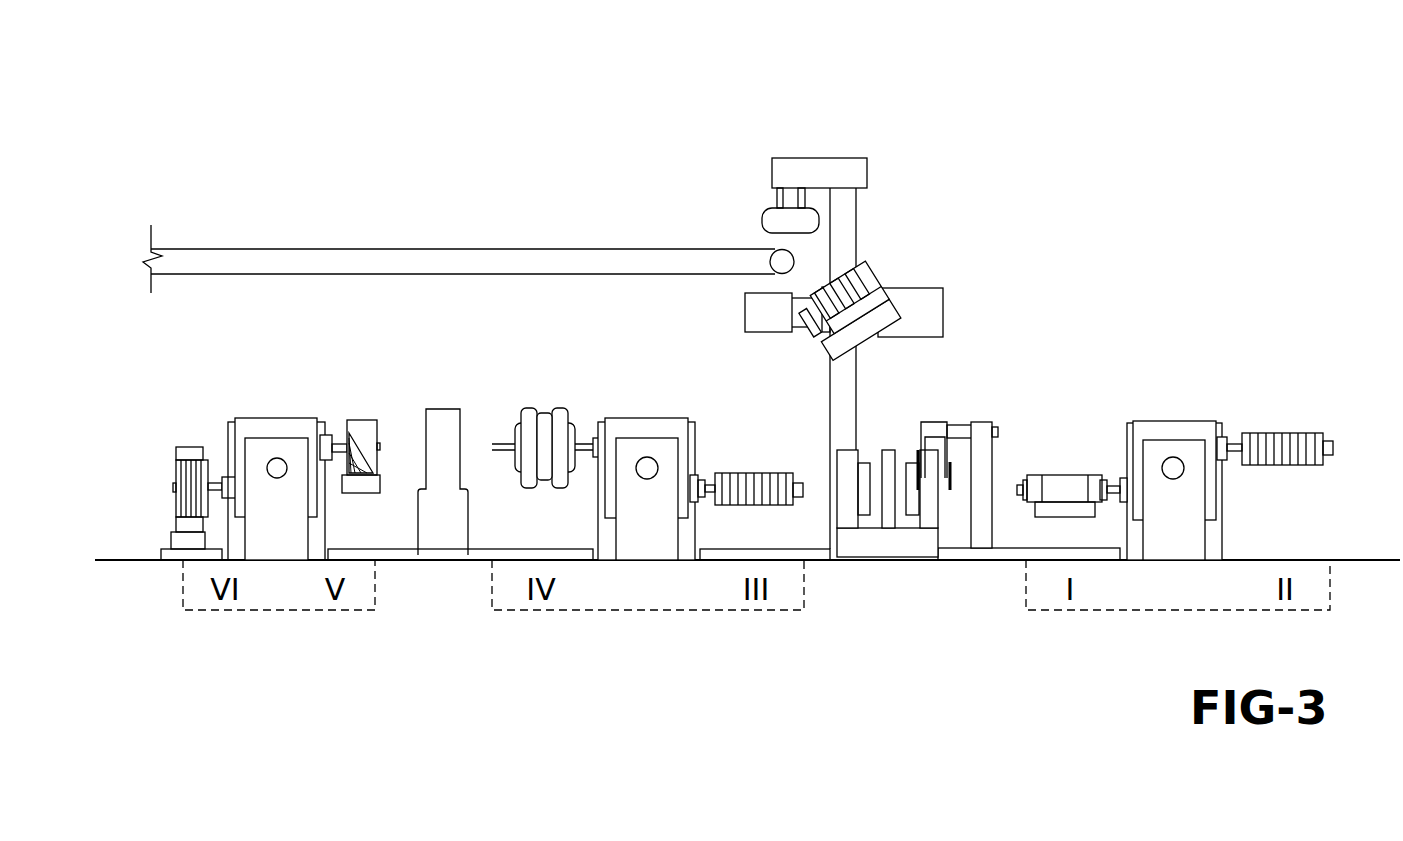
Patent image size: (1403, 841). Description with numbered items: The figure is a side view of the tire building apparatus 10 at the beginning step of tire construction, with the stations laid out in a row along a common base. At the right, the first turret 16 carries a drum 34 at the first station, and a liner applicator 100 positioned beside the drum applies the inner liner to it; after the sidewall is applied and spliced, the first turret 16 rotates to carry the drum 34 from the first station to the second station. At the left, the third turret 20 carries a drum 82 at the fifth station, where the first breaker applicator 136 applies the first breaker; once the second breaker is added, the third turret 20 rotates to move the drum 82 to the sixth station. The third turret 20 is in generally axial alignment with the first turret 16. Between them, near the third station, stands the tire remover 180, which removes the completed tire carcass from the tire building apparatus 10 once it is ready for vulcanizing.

The tire building apparatus 10 is at (858, 88).
The first turret 16 is at (1186, 447).
The third turret 20 is at (277, 458).
The drum 34 is at (1104, 477).
The drum 82 is at (349, 432).
The liner applicator 100 is at (1080, 512).
The first breaker applicator 136 is at (351, 492).
The tire remover 180 is at (853, 292).